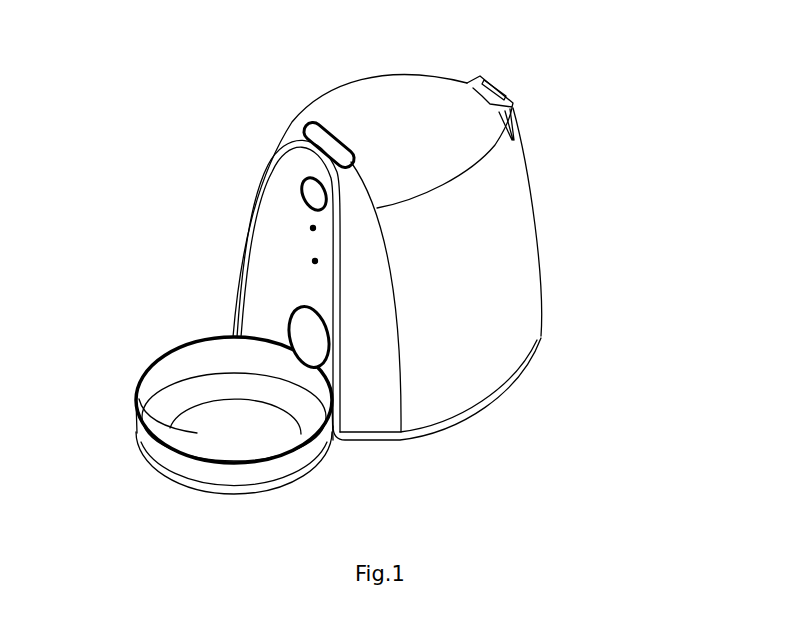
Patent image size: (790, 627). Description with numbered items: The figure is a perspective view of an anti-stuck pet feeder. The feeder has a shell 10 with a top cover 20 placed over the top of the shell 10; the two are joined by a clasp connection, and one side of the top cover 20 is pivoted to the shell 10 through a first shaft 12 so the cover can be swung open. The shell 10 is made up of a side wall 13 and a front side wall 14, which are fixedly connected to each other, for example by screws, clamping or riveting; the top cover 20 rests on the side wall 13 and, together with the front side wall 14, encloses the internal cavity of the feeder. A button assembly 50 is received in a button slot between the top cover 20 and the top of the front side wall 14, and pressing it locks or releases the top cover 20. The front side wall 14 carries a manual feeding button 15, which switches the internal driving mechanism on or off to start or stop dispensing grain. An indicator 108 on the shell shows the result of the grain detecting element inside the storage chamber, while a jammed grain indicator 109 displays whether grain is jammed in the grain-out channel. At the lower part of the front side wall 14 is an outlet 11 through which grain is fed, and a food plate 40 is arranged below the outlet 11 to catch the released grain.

The shell 10 is at (505, 284).
The outlet 11 is at (303, 325).
The first shaft 12 is at (514, 105).
The side wall 13 is at (516, 217).
The front side wall 14 is at (263, 287).
The manual feeding button 15 is at (317, 198).
The top cover 20 is at (402, 87).
The food plate 40 is at (137, 397).
The button assembly 50 is at (316, 139).
The indicator 108 is at (315, 261).
The jammed grain indicator 109 is at (320, 216).